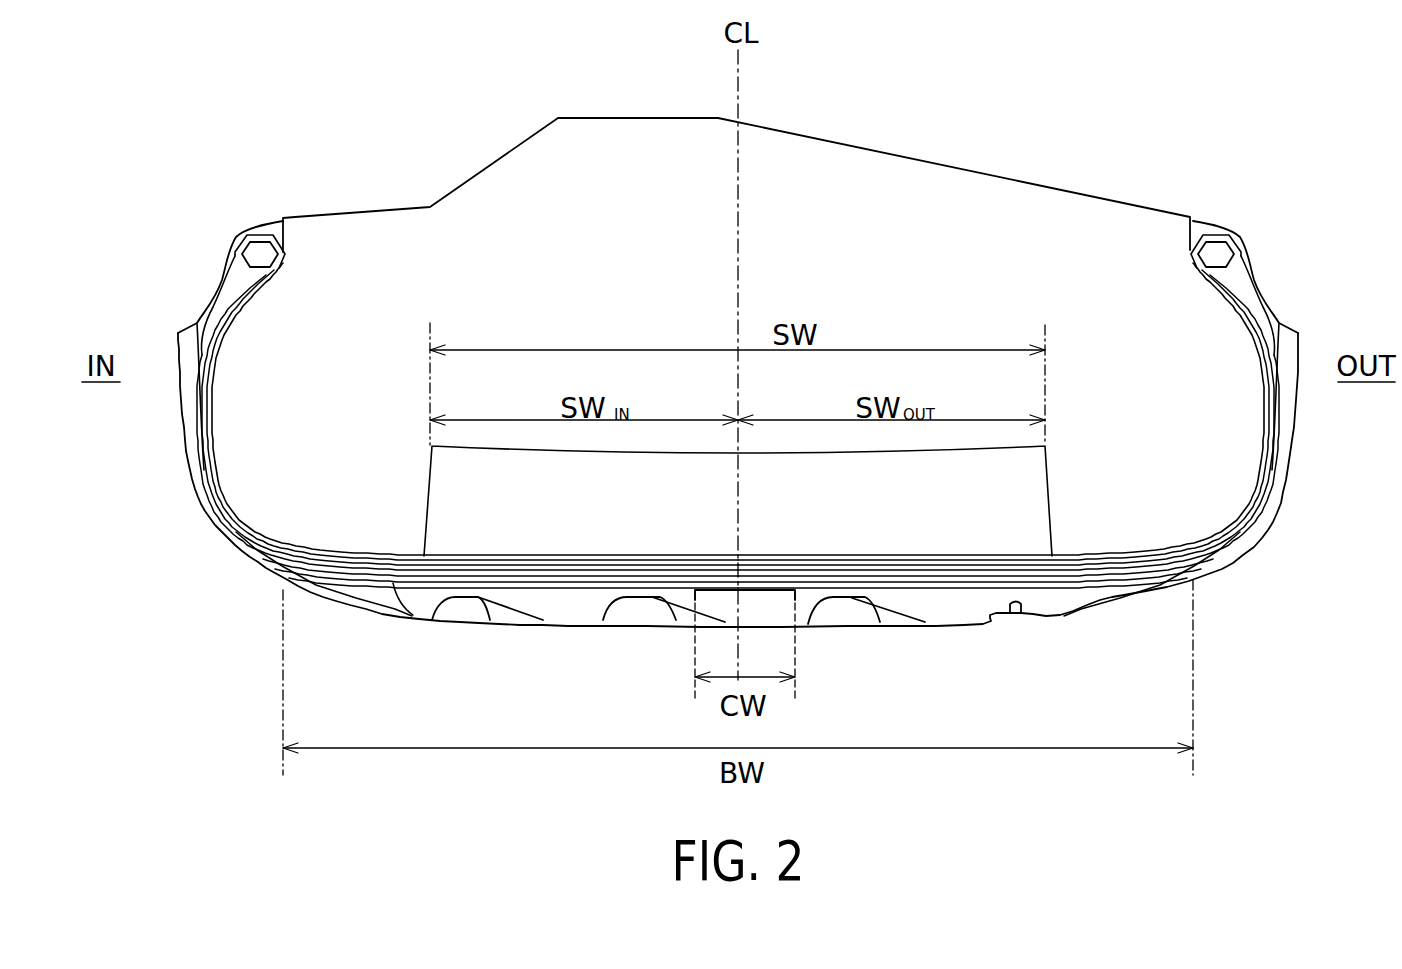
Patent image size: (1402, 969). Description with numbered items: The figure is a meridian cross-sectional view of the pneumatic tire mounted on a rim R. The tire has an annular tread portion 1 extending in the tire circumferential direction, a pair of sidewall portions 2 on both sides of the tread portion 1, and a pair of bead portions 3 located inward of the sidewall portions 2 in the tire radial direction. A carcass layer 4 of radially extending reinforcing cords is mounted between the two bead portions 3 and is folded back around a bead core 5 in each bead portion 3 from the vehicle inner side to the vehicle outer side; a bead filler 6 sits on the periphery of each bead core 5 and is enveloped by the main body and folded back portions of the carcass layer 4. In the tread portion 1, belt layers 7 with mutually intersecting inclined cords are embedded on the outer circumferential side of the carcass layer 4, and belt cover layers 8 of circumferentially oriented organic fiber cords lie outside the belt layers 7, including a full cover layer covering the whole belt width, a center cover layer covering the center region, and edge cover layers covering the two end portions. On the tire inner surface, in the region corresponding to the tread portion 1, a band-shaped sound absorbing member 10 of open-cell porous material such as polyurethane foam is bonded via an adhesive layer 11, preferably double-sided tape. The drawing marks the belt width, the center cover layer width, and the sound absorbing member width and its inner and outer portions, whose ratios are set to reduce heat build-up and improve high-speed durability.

The tread portion 1 is at (605, 651).
The sidewall portions 2 is at (156, 438).
The bead portions 3 is at (201, 257).
The carcass layer 4 is at (238, 505).
The bead core 5 is at (270, 252).
The bead filler 6 is at (240, 300).
The belt layers 7 is at (357, 580).
The belt cover layers 8 is at (268, 573).
The band-shaped sound absorbing member 10 is at (718, 473).
The adhesive layer 11 is at (1058, 554).
The rim R is at (950, 168).